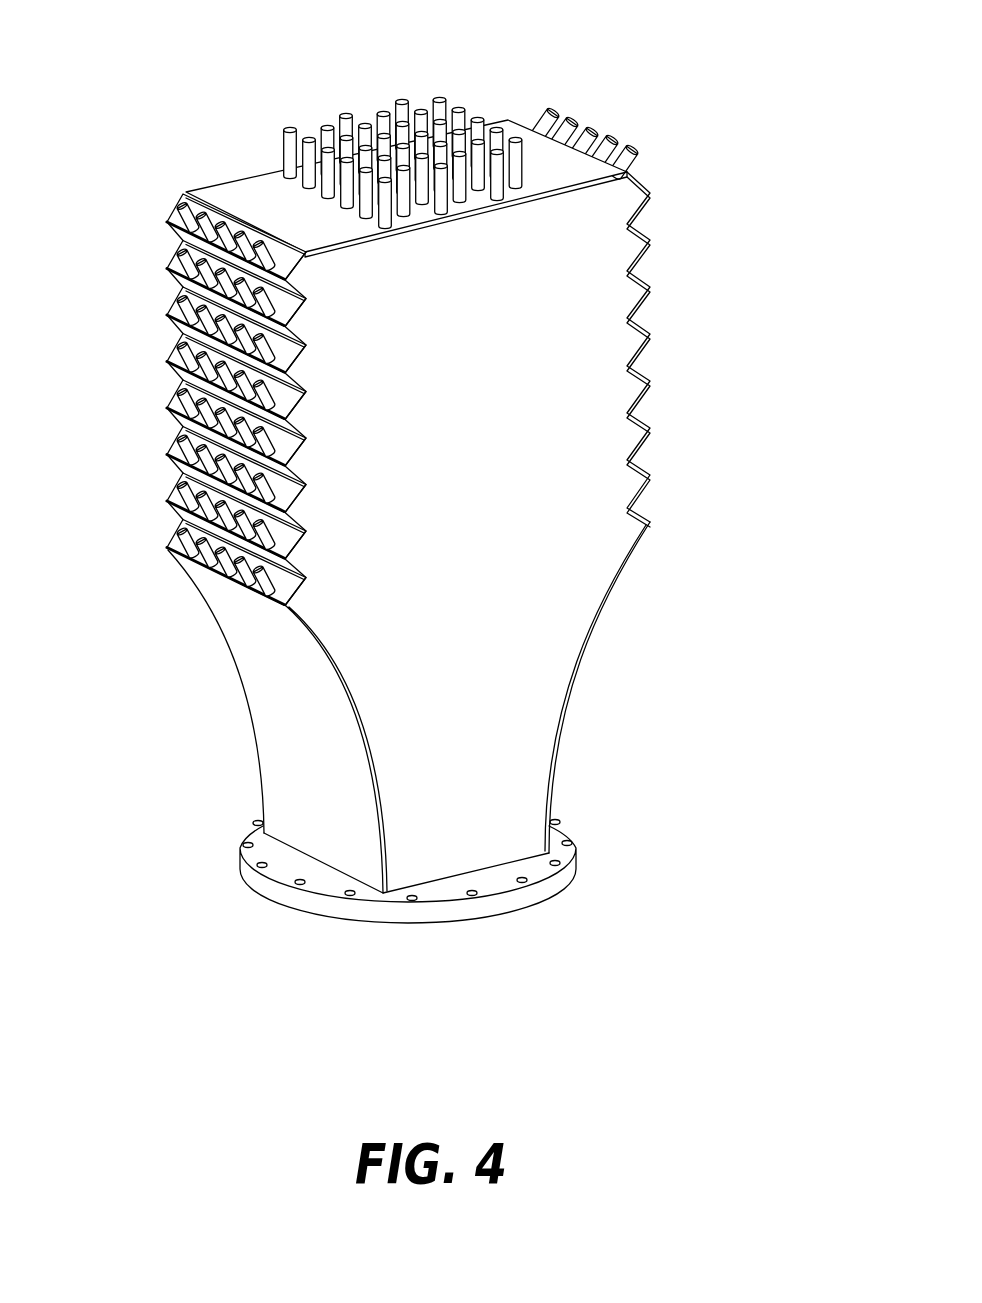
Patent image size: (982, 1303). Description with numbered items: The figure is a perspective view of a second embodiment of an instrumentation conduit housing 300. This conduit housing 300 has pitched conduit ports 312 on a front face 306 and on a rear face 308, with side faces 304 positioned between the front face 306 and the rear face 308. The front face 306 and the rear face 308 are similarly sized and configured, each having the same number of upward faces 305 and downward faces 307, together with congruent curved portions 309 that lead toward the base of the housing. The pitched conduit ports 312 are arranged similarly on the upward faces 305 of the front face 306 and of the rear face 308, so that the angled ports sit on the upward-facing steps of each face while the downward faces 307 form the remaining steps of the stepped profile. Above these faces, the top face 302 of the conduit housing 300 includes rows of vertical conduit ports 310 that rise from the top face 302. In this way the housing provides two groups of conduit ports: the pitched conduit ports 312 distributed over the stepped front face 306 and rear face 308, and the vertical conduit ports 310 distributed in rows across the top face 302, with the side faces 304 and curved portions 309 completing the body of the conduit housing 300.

The conduit housing 300 is at (773, 78).
The top face 302 is at (508, 120).
The side faces 304 is at (563, 654).
The upward faces 305 is at (187, 308).
The front face 306 is at (148, 555).
The downward faces 307 is at (187, 475).
The rear face 308 is at (690, 528).
The curved portions 309 is at (325, 737).
The vertical conduit ports 310 is at (283, 171).
The pitched conduit ports 312 is at (187, 210).